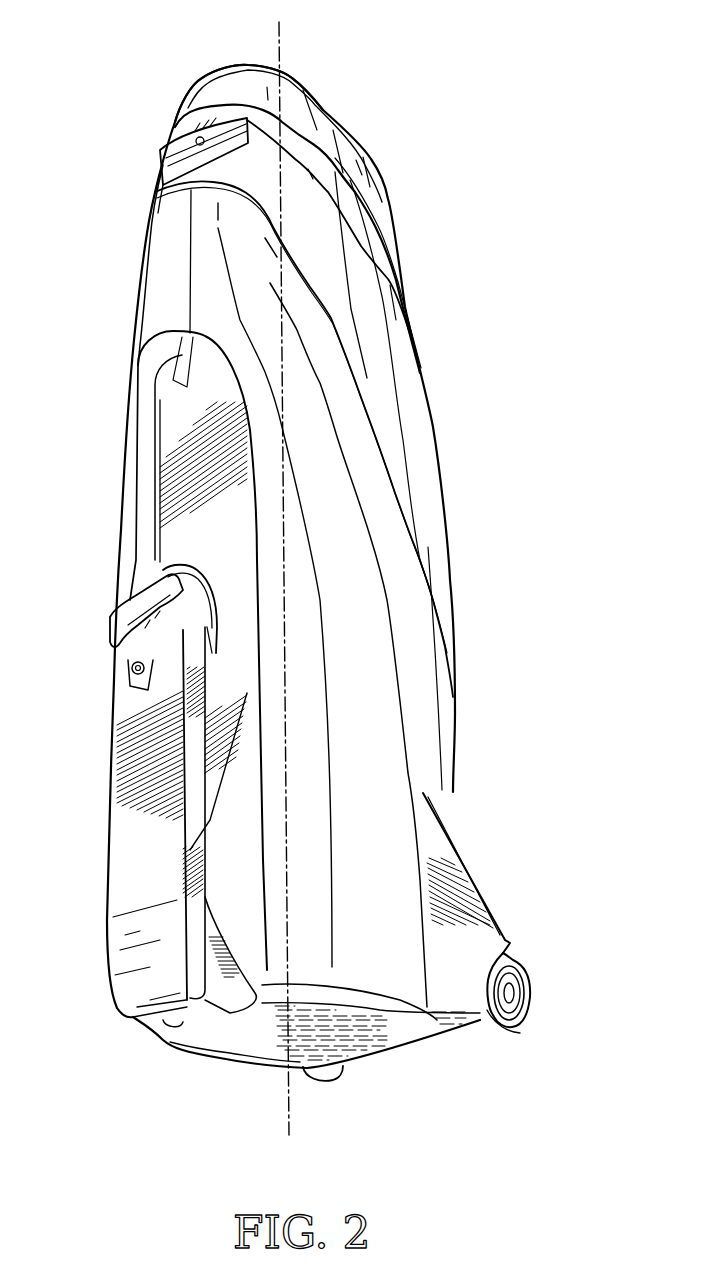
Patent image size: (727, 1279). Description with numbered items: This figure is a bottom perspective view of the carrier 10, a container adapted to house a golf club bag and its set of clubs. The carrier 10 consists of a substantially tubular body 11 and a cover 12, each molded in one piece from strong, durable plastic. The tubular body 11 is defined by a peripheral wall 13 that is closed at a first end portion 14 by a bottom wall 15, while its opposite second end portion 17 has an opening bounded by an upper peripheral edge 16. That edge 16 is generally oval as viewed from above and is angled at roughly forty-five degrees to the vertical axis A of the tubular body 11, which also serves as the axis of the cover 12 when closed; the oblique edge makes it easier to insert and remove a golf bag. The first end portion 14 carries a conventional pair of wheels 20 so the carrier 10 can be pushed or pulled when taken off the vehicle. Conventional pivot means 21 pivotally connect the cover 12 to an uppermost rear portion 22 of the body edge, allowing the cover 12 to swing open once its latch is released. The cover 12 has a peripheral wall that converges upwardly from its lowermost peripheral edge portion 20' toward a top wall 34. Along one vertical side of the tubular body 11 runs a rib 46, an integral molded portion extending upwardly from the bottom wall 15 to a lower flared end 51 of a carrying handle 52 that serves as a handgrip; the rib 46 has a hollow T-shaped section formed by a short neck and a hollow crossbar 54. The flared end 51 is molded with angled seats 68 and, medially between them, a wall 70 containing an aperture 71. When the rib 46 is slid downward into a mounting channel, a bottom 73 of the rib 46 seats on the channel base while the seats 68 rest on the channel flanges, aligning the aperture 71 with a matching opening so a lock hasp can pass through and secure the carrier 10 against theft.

The vertical axis A is at (280, 40).
The carrier 10 is at (527, 153).
The tubular body 11 is at (470, 758).
The cover 12 is at (387, 190).
The peripheral wall 13 is at (376, 694).
The first end portion 14 is at (390, 957).
The bottom wall 15 is at (243, 1027).
The upper peripheral edge 16 is at (398, 510).
The second end portion 17 is at (264, 272).
The wheels 20 is at (416, 1032).
The lowermost peripheral edge portion 20' is at (340, 318).
The pivot means 21 is at (163, 163).
The uppermost rear portion 22 is at (158, 213).
The top wall 34 is at (316, 89).
The rib 46 is at (103, 864).
The lower flared end 51 is at (194, 594).
The carrying handle 52 is at (133, 468).
The hollow crossbar 54 is at (197, 847).
The angled seats 68 is at (110, 643).
The wall 70 is at (132, 688).
The aperture 71 is at (130, 666).
The bottom 73 is at (163, 1027).